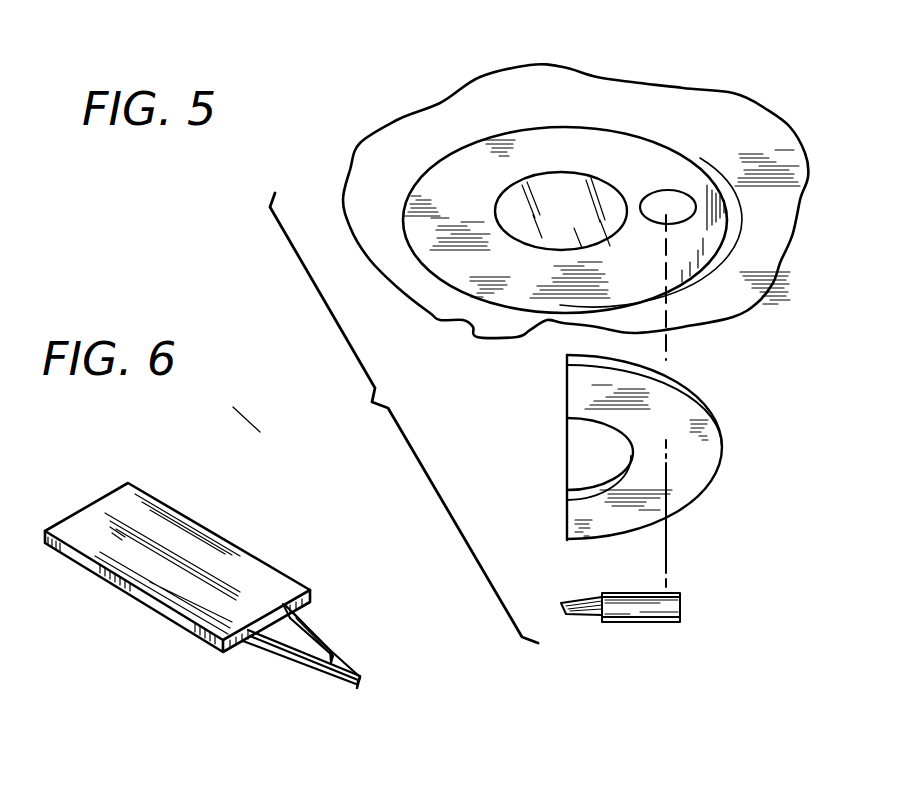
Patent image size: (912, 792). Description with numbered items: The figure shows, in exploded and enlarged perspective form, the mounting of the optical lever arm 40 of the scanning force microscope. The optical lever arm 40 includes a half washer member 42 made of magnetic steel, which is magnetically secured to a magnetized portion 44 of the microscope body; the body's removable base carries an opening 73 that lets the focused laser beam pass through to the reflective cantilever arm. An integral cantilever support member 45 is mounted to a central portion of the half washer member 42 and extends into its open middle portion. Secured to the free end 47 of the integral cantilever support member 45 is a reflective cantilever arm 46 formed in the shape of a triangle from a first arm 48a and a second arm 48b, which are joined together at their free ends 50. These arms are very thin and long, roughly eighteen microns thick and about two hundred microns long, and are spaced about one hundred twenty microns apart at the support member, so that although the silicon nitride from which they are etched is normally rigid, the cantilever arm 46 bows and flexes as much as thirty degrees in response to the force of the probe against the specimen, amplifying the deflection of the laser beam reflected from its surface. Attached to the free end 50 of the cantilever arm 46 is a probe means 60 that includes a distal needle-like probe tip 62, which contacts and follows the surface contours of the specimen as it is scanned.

In FIG. 6, the optical lever arm 40 is at (385, 418).
In FIG. 5, the half washer member 42 is at (568, 393).
In FIG. 5, the magnetized portion 44 is at (503, 147).
In FIG. 5, the integral cantilever support member 45 is at (640, 607).
In FIG. 6, the integral cantilever support member 45 is at (198, 508).
In FIG. 6, the reflective cantilever arm 46 is at (320, 622).
In FIG. 6, the free end of the integral cantilever support member 47 is at (282, 602).
In FIG. 6, the first arm 48a is at (280, 647).
In FIG. 6, the second arm 48b is at (335, 641).
In FIG. 6, the free end of the cantilever arm 50 is at (364, 677).
In FIG. 6, the probe means 60 is at (373, 691).
In FIG. 5, the probe tip 62 is at (563, 614).
In FIG. 6, the probe tip 62 is at (358, 689).
In FIG. 5, the opening 73 is at (557, 192).